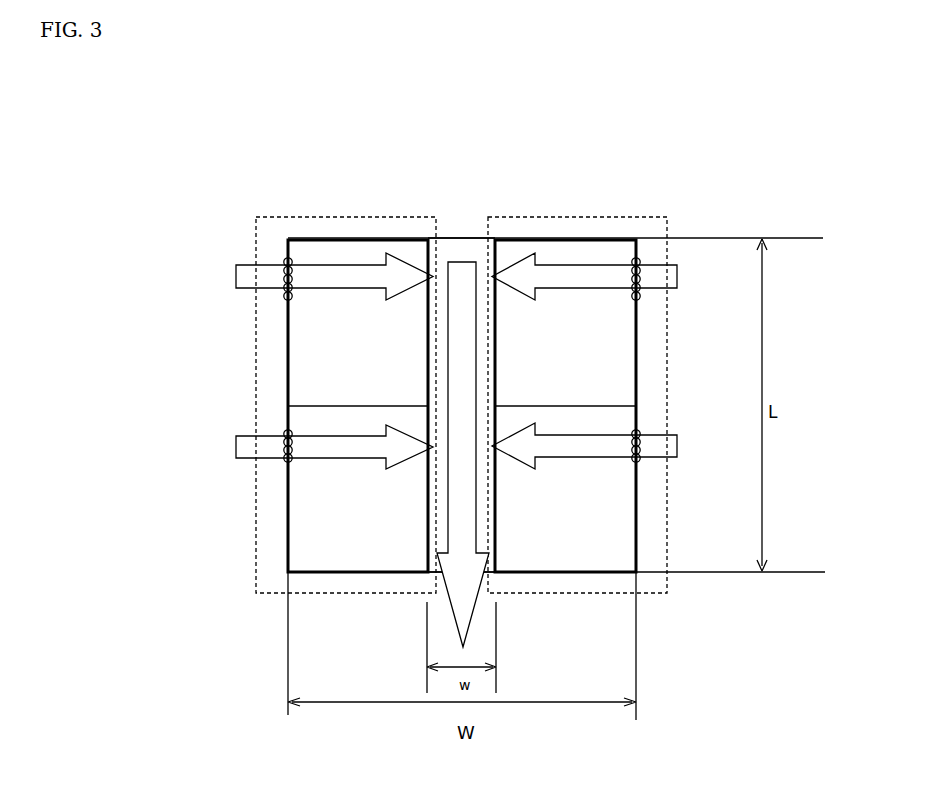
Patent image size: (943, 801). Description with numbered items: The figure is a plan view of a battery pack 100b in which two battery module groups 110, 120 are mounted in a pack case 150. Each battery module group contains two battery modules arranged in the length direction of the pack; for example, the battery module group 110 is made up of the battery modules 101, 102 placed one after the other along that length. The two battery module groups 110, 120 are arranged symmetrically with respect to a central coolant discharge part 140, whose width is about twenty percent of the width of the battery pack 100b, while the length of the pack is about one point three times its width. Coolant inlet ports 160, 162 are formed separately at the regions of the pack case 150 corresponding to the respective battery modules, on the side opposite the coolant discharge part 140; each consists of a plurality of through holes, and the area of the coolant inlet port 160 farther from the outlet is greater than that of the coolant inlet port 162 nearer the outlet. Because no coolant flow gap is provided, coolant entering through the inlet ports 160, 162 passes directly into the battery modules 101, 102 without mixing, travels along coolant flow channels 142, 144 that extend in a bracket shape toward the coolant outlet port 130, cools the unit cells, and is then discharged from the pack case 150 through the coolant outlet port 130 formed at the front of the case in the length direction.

The battery pack 100b is at (270, 173).
The battery module 101 is at (360, 253).
The battery module 102 is at (306, 510).
The battery module group 110 is at (256, 350).
The battery module group 120 is at (667, 335).
The coolant outlet port 130 is at (438, 575).
The coolant discharge part 140 is at (452, 258).
The coolant flow channel 142 is at (236, 275).
The coolant flow channel 144 is at (236, 442).
The pack case 150 is at (540, 237).
The coolant inlet port 160 is at (286, 297).
The coolant inlet port 162 is at (286, 462).